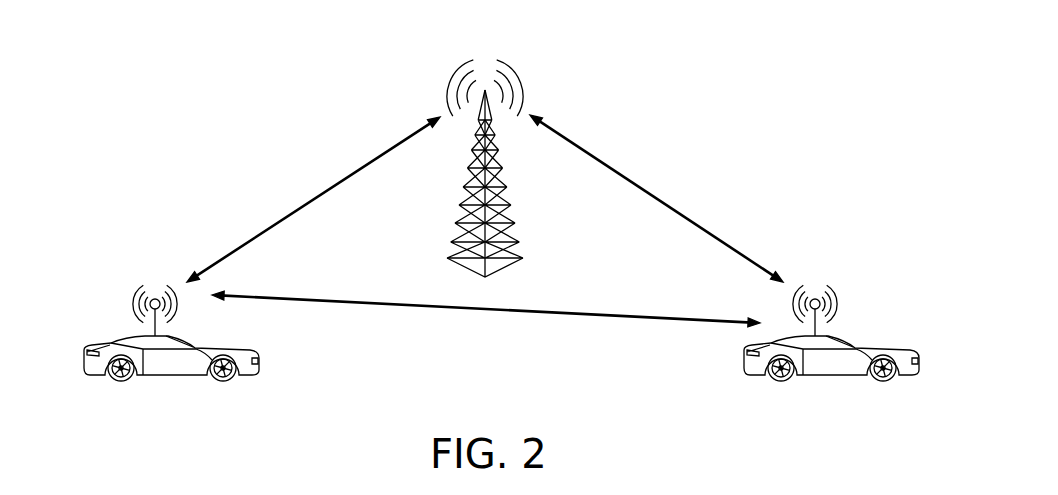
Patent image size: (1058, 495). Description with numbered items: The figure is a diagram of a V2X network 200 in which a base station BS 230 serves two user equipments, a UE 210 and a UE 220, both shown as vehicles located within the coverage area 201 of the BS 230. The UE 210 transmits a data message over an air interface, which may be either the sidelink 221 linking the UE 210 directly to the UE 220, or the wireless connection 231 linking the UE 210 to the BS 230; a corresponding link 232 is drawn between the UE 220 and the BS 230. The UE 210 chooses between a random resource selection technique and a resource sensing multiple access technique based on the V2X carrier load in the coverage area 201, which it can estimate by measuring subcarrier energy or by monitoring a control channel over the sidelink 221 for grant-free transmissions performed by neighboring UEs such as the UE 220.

The V2X network 200 is at (348, 83).
The coverage area 201 is at (580, 348).
The UE 210 is at (167, 376).
The UE 220 is at (825, 376).
The sidelink 221 is at (374, 304).
The BS 230 is at (512, 190).
The wireless connection 231 is at (340, 185).
The Uu link between second vehicle and base station 232 is at (660, 166).